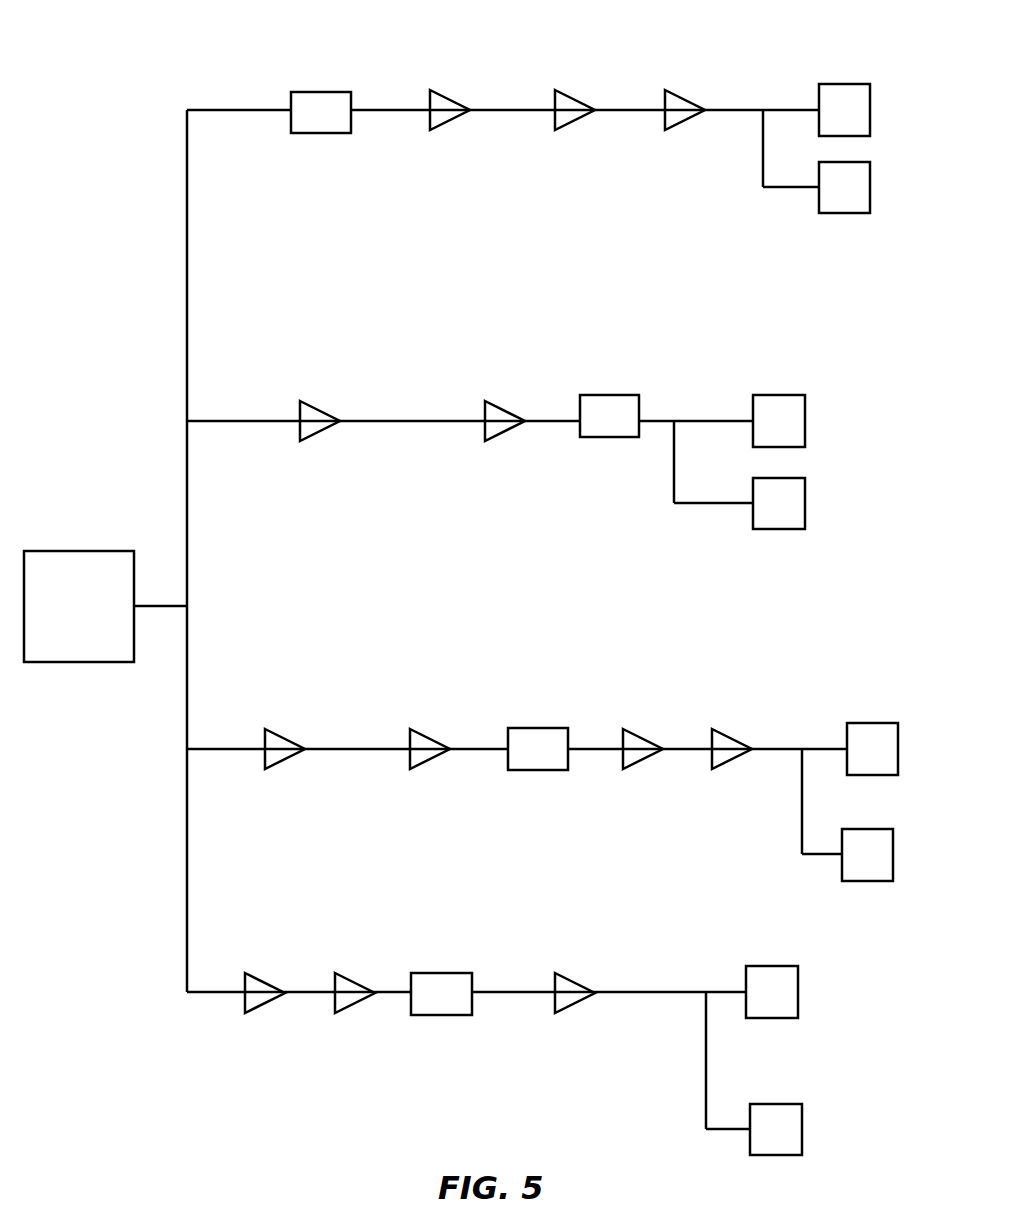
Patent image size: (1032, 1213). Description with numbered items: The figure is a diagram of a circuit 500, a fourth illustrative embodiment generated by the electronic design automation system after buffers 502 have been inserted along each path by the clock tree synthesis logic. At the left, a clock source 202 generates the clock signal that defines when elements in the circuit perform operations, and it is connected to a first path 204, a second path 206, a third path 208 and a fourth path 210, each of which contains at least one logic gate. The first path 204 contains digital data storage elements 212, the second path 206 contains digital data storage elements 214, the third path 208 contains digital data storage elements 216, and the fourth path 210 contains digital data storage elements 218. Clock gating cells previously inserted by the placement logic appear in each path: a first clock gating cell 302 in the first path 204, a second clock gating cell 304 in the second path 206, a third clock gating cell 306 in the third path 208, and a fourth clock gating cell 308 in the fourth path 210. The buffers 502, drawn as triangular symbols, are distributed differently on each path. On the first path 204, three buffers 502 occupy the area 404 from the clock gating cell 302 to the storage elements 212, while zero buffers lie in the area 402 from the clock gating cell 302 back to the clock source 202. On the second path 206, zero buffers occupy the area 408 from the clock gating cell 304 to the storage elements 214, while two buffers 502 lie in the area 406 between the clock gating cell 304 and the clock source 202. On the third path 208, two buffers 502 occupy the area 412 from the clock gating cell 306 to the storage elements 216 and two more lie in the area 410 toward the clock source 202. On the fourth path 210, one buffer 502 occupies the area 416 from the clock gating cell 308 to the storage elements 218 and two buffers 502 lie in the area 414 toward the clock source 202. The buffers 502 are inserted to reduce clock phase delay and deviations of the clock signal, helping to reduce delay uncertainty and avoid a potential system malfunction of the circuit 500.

The clock source 202 is at (72, 551).
The first path 204 is at (202, 109).
The second path 206 is at (197, 424).
The third path 208 is at (195, 752).
The fourth path 210 is at (221, 994).
The digital data storage elements 212 is at (835, 84).
The digital data storage elements 214 is at (805, 425).
The digital data storage elements 216 is at (862, 723).
The digital data storage elements 218 is at (772, 1018).
The first clock gating cell 302 is at (321, 133).
The second clock gating cell 304 is at (600, 437).
The third clock gating cell 306 is at (532, 770).
The fourth clock gating cell 308 is at (435, 1015).
The area 402 is at (217, 105).
The area 404 is at (355, 81).
The area 406 is at (210, 405).
The area 408 is at (665, 418).
The area 410 is at (210, 720).
The area 412 is at (595, 721).
The area 414 is at (210, 970).
The area 416 is at (485, 970).
The circuit 500 is at (133, 902).
The buffers 502 is at (442, 125).